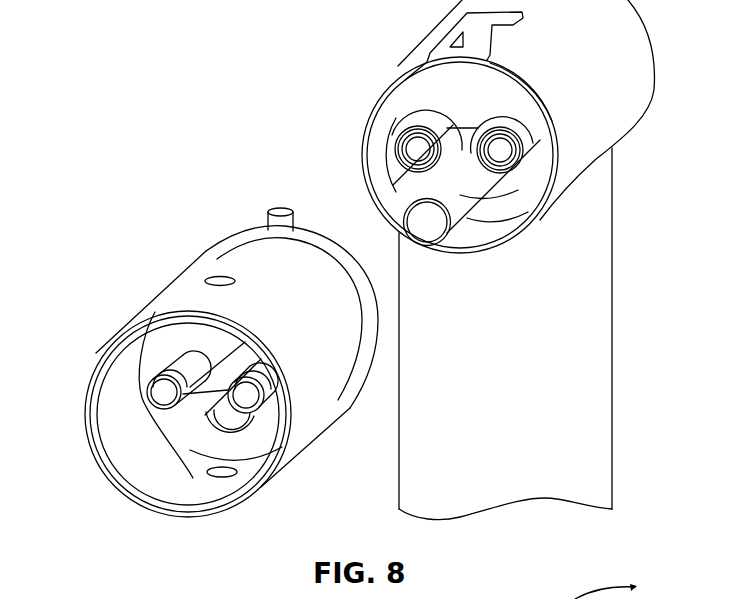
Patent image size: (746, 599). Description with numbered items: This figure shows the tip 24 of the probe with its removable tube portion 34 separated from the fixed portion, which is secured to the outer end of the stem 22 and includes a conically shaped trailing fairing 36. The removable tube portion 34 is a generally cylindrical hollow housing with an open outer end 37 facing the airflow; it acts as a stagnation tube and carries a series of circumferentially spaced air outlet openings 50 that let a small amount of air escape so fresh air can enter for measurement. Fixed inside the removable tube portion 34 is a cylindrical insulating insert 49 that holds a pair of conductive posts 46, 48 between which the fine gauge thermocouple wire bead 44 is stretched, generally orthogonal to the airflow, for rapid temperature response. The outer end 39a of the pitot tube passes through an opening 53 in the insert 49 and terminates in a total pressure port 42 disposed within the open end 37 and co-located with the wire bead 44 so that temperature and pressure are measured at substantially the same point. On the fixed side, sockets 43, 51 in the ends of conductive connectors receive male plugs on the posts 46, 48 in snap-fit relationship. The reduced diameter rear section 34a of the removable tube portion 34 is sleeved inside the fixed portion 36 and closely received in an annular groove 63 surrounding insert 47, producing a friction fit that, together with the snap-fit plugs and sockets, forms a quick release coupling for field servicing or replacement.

The stem 22 is at (572, 477).
The tip 24 is at (222, 63).
The removable tube portion 34 is at (190, 290).
The reduced diameter rear section 34a is at (363, 303).
The trailing fairing 36 is at (577, 40).
The open outer end 37 is at (213, 497).
The outer end of pitot tube 39a is at (438, 229).
The total pressure port 42 is at (490, 244).
The socket 43 is at (520, 124).
The wire bead 44 is at (163, 391).
The conductive post 46 is at (199, 416).
The insert 47 is at (470, 85).
The conductive post 48 is at (245, 397).
The insulating insert 49 is at (158, 345).
The air outlet openings 50 is at (195, 255).
The socket 51 is at (518, 163).
The opening 53 is at (165, 482).
The annular groove 63 is at (397, 79).